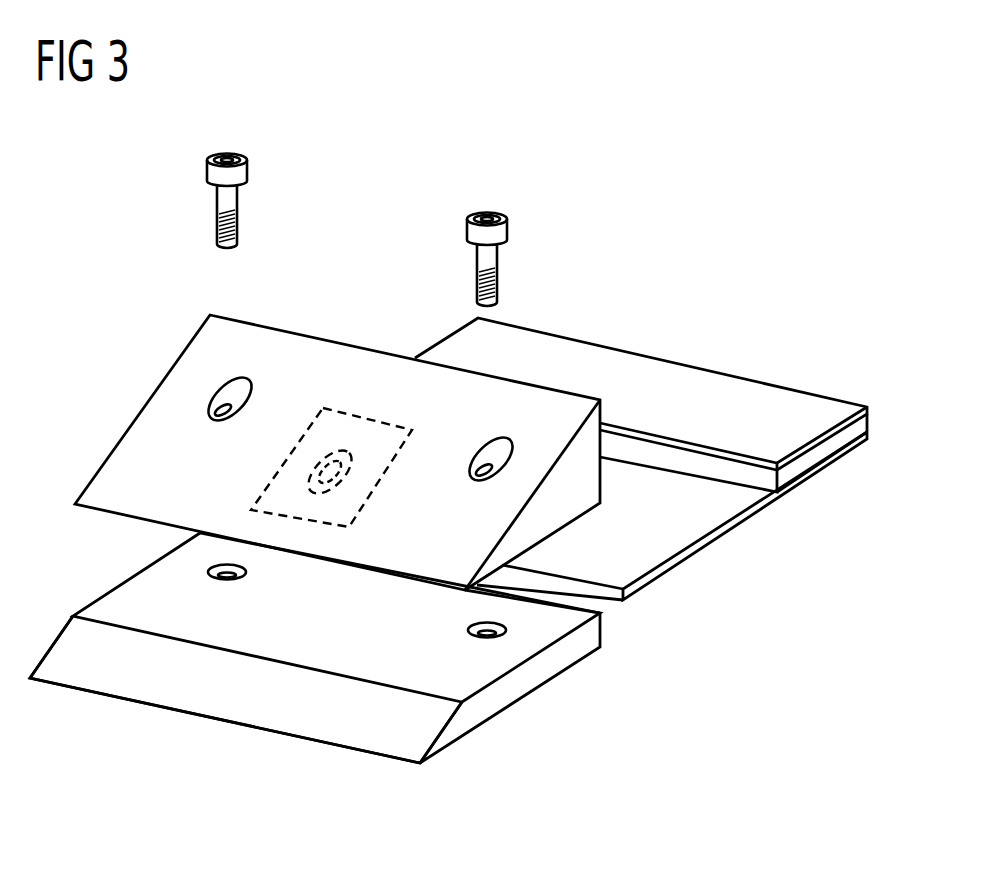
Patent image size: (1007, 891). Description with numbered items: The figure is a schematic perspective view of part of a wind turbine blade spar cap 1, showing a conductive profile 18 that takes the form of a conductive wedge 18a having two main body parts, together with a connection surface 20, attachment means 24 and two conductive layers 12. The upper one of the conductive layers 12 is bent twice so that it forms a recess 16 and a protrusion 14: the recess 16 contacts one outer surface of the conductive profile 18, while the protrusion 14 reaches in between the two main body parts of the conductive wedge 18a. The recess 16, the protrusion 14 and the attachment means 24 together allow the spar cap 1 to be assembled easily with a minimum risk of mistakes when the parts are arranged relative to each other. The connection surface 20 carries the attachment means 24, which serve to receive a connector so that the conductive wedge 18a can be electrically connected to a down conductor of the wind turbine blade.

The wind turbine blade spar cap 1 is at (98, 343).
The conductive layers 12 is at (662, 375).
The protrusion 14 is at (718, 538).
The recess 16 is at (740, 472).
The conductive profile 18 is at (550, 520).
The conductive wedge 18a is at (570, 659).
The connection surface 20 is at (280, 481).
The attachment means 24 is at (240, 175).